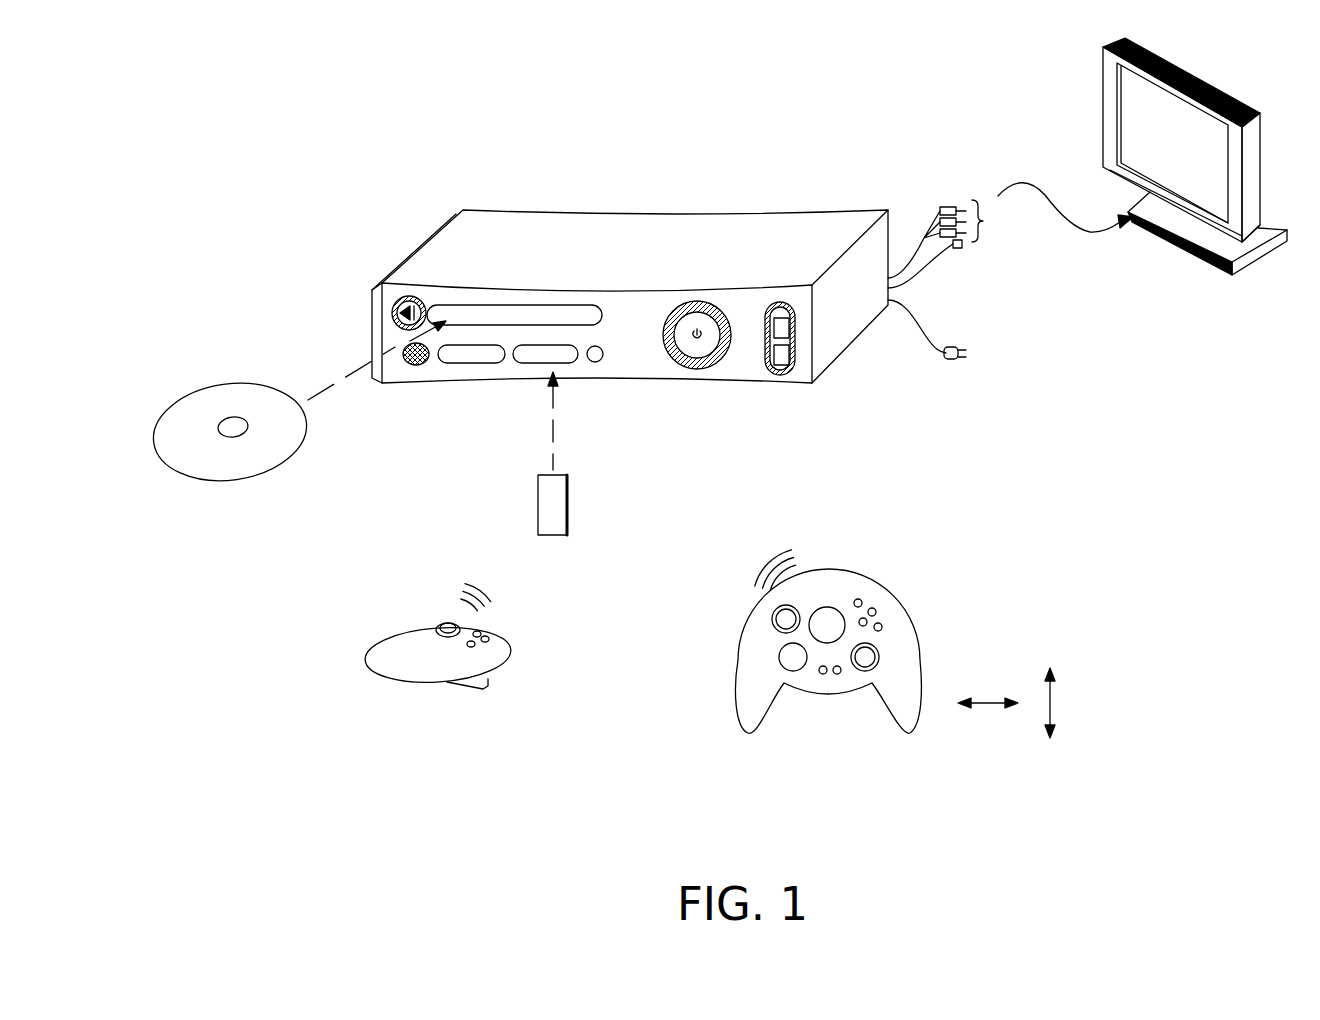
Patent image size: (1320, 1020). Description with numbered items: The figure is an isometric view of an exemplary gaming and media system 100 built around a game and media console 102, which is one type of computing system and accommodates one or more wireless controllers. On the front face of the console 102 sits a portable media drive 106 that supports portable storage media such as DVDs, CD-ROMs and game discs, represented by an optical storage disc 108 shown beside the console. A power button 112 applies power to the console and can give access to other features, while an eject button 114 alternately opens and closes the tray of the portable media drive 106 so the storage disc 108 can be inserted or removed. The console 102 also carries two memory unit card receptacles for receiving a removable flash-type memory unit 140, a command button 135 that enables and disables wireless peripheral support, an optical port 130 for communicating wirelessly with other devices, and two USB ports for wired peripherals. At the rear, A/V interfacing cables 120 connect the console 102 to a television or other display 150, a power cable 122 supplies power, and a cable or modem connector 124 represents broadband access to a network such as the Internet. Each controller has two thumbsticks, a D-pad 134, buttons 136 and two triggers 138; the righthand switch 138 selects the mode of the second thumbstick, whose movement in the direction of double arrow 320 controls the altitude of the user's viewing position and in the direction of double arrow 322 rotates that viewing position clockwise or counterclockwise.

The gaming and media system 100 is at (662, 170).
The game and media console 102 is at (500, 220).
The portable media drive 106 is at (521, 303).
The optical storage disc 108 is at (240, 479).
The power button 112 is at (700, 369).
The eject button 114 is at (394, 308).
The A/V interfacing cables 120 is at (939, 208).
The power cable 122 is at (946, 362).
The cable or modem connector 124 is at (958, 249).
The optical port 130 is at (414, 367).
The D-pad 134 is at (778, 657).
The command button 135 is at (596, 362).
The buttons 136 is at (875, 612).
The triggers 138 is at (482, 696).
The removable flash-type memory unit 140 is at (555, 536).
The television or display 150 is at (1103, 110).
The double arrow 320 is at (1050, 700).
The double arrow 322 is at (985, 704).